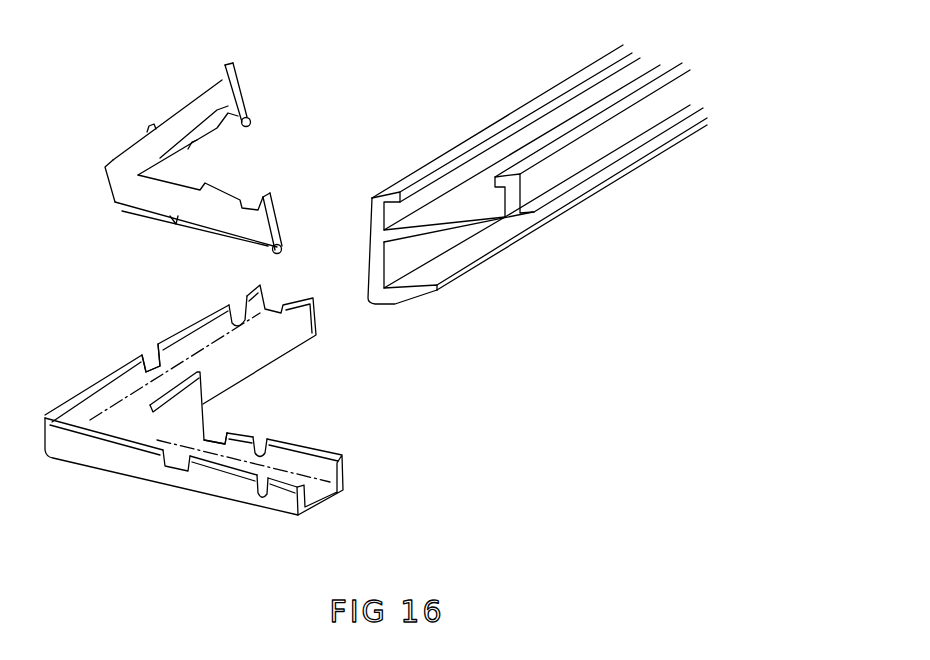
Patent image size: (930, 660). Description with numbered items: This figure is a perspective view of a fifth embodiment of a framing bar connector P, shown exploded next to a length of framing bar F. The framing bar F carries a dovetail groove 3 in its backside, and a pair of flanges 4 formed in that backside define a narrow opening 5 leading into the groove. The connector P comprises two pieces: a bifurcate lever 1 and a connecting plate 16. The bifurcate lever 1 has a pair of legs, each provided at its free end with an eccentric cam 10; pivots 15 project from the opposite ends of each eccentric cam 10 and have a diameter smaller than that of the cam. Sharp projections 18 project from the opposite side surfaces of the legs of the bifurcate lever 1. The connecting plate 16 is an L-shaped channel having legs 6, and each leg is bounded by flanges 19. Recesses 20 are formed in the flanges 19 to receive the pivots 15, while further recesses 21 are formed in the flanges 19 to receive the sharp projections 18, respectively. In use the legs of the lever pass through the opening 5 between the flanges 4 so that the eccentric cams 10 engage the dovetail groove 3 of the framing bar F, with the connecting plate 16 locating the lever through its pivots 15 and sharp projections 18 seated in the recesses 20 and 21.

The bifurcate lever 1 is at (216, 147).
The dovetail groove 3 is at (537, 168).
The flanges 4 is at (522, 110).
The opening 5 is at (563, 113).
The legs 6 is at (206, 409).
The eccentric cam 10 is at (247, 100).
The pivots 15 is at (230, 62).
The connecting plate 16 is at (93, 470).
The sharp projections 18 is at (151, 128).
The flanges 19 is at (113, 372).
The recesses 20 is at (260, 432).
The recesses 21 is at (250, 387).
The framing bar F is at (474, 136).
The framing bar connector P is at (90, 270).